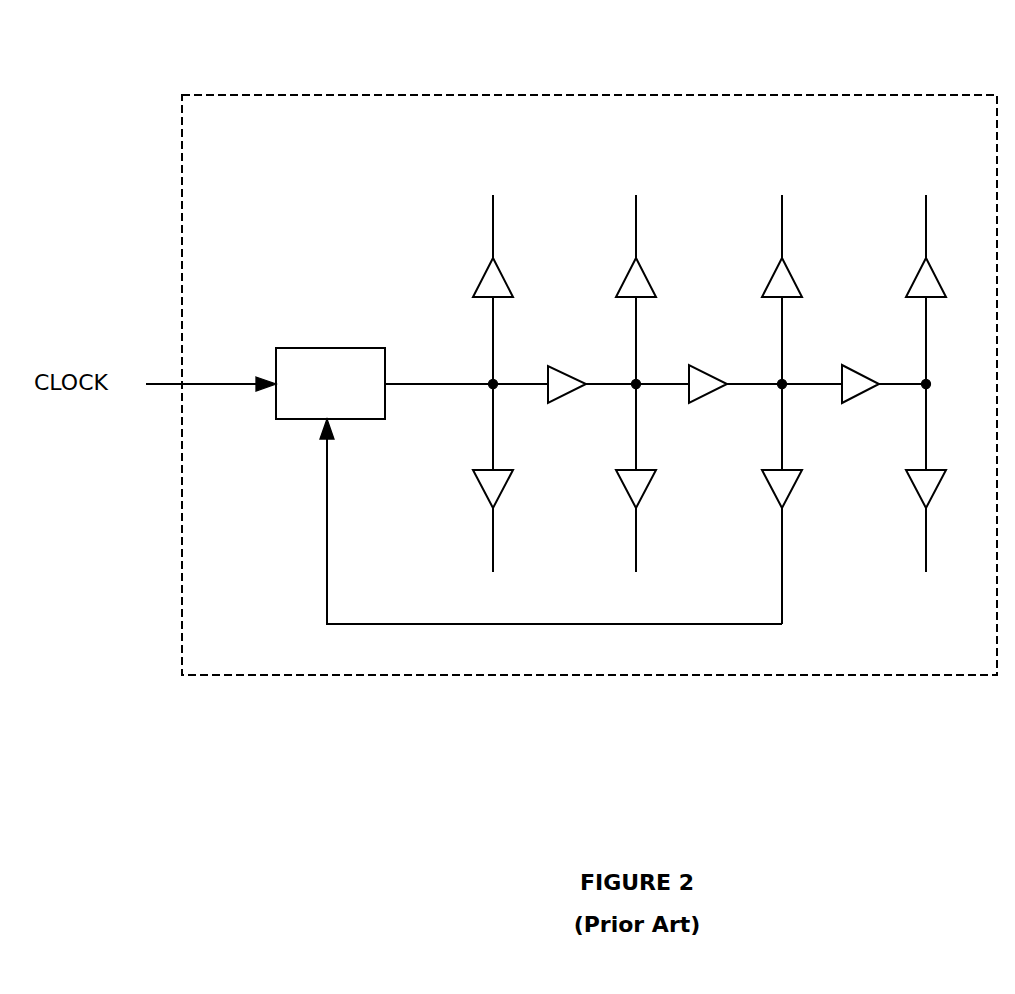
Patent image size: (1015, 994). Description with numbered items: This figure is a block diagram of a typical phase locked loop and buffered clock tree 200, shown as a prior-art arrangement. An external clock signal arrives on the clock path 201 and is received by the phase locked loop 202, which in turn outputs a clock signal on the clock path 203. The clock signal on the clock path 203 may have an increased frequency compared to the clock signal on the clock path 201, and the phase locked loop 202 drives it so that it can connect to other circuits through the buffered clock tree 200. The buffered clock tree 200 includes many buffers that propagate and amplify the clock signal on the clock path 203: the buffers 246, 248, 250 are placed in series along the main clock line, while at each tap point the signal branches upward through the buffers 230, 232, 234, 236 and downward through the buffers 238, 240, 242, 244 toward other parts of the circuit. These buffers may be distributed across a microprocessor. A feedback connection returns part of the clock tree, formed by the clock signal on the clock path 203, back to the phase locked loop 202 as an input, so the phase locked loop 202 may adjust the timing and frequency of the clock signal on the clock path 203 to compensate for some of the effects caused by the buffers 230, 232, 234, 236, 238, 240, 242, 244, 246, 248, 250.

The buffered clock tree 200 is at (928, 95).
The clock path 201 is at (210, 384).
The phase locked loop 202 is at (340, 348).
The clock path 203 is at (421, 384).
The buffer 230 is at (500, 278).
The buffer 232 is at (643, 278).
The buffer 234 is at (789, 279).
The buffer 236 is at (933, 279).
The buffer 238 is at (508, 470).
The buffer 240 is at (651, 470).
The buffer 242 is at (797, 470).
The buffer 244 is at (942, 470).
The buffer 246 is at (560, 371).
The buffer 248 is at (703, 371).
The buffer 250 is at (854, 371).